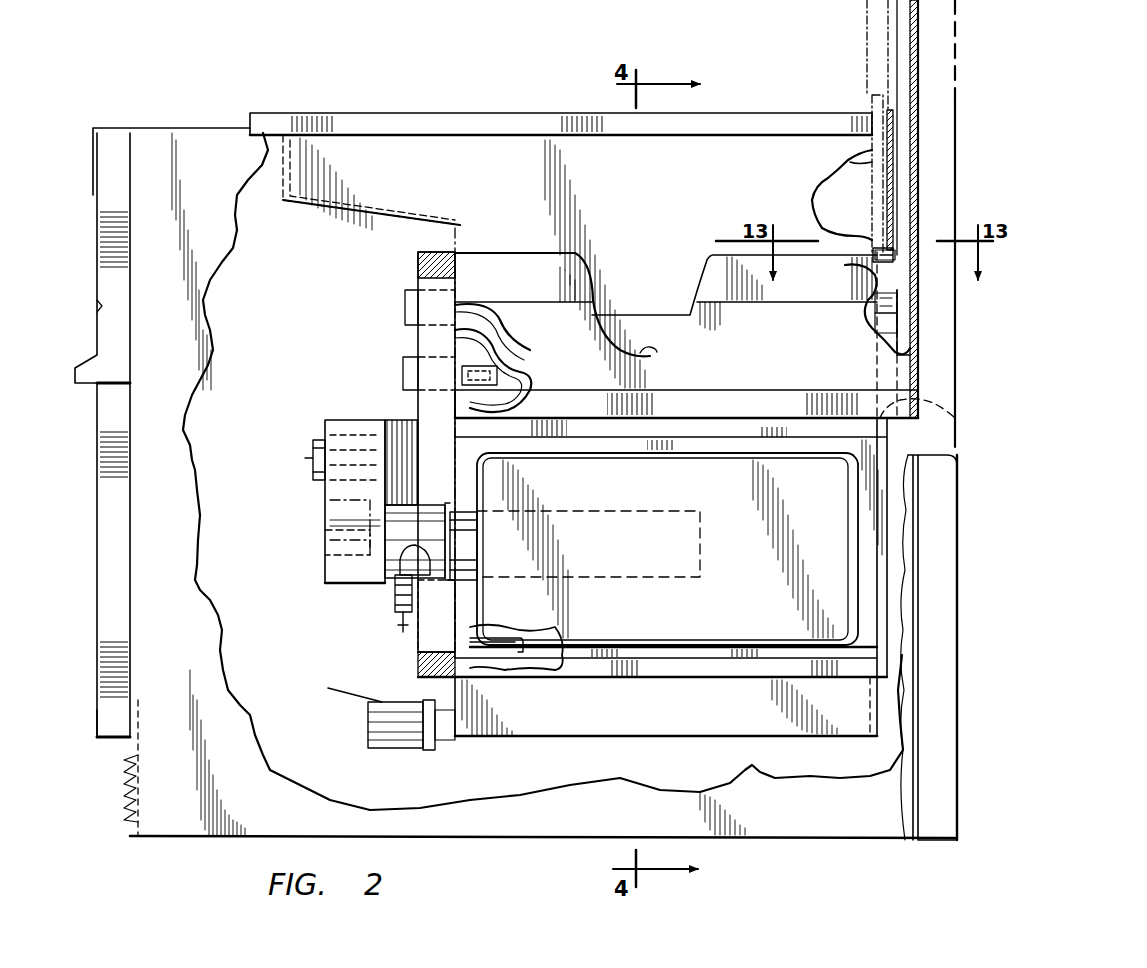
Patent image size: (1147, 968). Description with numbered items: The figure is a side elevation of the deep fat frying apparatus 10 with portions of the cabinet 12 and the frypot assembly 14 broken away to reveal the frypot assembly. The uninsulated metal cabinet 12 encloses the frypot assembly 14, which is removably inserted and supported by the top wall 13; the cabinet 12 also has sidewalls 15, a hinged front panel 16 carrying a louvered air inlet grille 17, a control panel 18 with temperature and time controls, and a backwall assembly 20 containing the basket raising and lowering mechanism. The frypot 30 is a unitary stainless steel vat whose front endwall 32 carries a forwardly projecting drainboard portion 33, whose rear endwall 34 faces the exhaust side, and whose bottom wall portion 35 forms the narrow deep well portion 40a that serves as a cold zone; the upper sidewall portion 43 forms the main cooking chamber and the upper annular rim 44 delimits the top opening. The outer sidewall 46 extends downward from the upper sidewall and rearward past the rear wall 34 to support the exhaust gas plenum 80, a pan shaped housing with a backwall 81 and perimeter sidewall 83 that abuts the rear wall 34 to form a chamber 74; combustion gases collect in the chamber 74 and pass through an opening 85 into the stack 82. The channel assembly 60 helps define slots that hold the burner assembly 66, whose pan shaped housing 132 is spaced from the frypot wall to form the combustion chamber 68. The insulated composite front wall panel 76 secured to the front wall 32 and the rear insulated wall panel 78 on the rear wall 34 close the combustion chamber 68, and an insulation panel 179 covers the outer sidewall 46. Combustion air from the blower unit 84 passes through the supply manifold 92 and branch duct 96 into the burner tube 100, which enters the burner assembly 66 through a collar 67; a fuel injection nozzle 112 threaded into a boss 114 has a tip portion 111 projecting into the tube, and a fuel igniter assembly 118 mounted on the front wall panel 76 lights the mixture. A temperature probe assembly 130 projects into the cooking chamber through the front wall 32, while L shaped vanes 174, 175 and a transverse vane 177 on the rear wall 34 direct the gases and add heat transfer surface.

The cooking apparatus 10 is at (476, 100).
The cabinet 12 is at (872, 832).
The top wall 13 is at (205, 130).
The frypot assembly 14 is at (560, 108).
The sidewalls 15 is at (742, 785).
The front panel 16 is at (105, 700).
The louvered air inlet grille 17 is at (130, 834).
The control panel 18 is at (88, 323).
The backwall assembly 20 is at (940, 553).
The frypot 30 is at (755, 113).
The front endwall 32 is at (453, 357).
The forwardly projecting portion 33 is at (358, 225).
The rear endwall 34 is at (838, 164).
The bottom wall portion 35 is at (603, 737).
The deep well portion 40a is at (522, 413).
The upper sidewall portion 43 is at (472, 313).
The upper annular rim 44 is at (410, 113).
The outer sidewall portion 46 is at (517, 347).
The channel assembly 60 is at (587, 668).
The burner assembly 66 is at (681, 652).
The collar 67 is at (463, 540).
The combustion chamber 68 is at (543, 647).
The chamber 74 is at (918, 303).
The composite front wall panel 76 is at (433, 400).
The rear insulated wall panel 78 is at (883, 663).
The exhaust gas plenum 80 is at (927, 344).
The backwall 81 is at (957, 327).
The stack 82 is at (917, 160).
The perimeter sidewall 83 is at (950, 414).
The combustion air charging blower unit 84 is at (308, 487).
The opening 85 is at (913, 253).
The combustion air supply manifold 92 is at (332, 415).
The branch duct 96 is at (326, 528).
The burner tube 100 is at (663, 511).
The tip portion 111 is at (390, 560).
The fuel injection nozzle 112 is at (403, 630).
The boss 114 is at (390, 587).
The fuel igniter assembly 118 is at (487, 637).
The temperature probe assembly 130 is at (523, 377).
The housing 132 is at (855, 678).
The vane 174 is at (873, 338).
The vane 175 is at (855, 310).
The transverse vane 177 is at (860, 270).
The insulation panel 179 is at (657, 352).